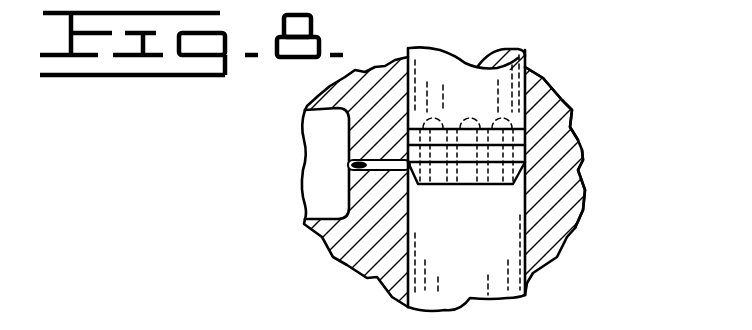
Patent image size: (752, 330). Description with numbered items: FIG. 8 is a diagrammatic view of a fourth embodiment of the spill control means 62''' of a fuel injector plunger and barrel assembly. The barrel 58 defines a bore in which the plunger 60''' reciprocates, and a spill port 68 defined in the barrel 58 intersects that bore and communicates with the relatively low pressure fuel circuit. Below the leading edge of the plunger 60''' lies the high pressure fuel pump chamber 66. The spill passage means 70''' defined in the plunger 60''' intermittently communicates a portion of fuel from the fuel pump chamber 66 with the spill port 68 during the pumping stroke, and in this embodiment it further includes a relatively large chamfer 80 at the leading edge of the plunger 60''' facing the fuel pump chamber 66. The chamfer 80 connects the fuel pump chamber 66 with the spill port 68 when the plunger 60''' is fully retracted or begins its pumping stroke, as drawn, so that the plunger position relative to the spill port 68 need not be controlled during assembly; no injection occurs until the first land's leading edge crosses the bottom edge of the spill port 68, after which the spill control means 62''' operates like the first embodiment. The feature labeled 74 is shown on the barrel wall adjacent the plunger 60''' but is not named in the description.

The barrel 58 is at (567, 238).
The plunger 60''' is at (376, 165).
The spill control means 62''' is at (271, 163).
The fuel pump chamber 66 is at (474, 266).
The spill port 68 is at (352, 164).
The spill passage means 70''' is at (614, 189).
The wall portion 74 is at (518, 140).
The chamfer 80 is at (530, 183).